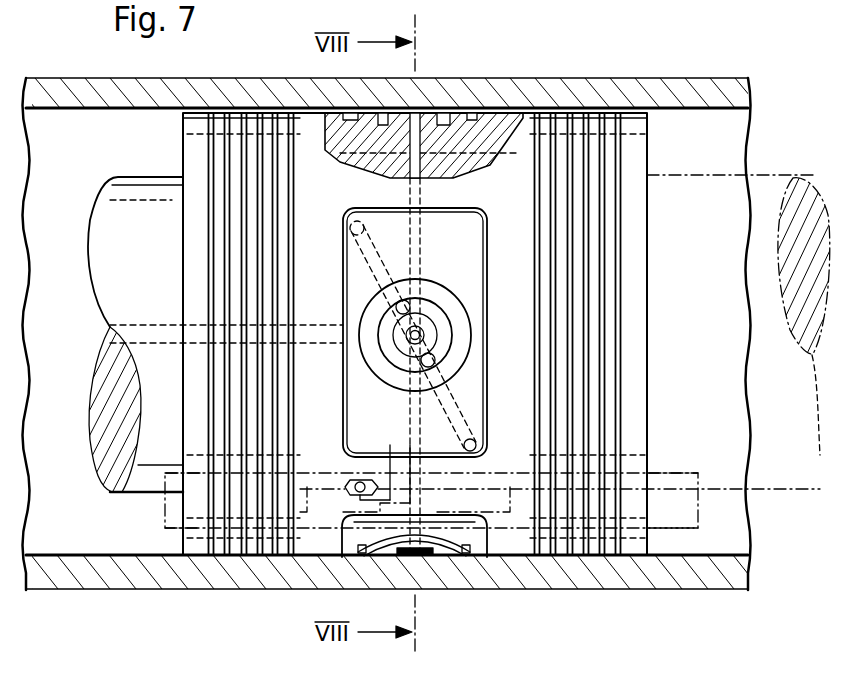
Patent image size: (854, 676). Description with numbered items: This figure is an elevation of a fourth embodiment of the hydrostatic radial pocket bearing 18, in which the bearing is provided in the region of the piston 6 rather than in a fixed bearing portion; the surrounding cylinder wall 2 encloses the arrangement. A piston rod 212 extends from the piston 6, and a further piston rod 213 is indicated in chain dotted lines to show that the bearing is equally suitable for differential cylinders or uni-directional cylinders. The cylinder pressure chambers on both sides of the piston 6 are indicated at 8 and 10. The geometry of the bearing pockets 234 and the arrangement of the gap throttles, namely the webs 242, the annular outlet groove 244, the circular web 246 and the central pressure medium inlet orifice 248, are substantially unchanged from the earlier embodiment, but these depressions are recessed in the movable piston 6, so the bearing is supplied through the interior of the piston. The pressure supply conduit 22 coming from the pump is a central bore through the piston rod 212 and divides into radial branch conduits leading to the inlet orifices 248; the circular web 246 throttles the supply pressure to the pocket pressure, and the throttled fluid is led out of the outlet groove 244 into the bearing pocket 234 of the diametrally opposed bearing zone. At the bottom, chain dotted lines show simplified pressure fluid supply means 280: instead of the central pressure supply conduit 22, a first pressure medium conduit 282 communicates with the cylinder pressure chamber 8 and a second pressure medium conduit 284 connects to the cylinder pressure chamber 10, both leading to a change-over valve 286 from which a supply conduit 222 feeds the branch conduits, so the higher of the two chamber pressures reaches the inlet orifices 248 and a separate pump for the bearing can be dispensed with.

The housing wall 2 is at (667, 85).
The cylinder pressure chamber 8 is at (103, 130).
The cylinder pressure chamber 10 is at (706, 128).
The hydrostatic pocket bearing 18 is at (333, 200).
The piston 6 is at (517, 168).
The bearing pocket 234 is at (462, 225).
The pressure supply conduit 22 is at (143, 327).
The piston rod 212 is at (143, 478).
The further piston rod 213 is at (798, 447).
The webs 242 is at (455, 358).
The annular outlet groove 244 is at (445, 335).
The circular web 246 is at (405, 348).
The central pressure medium inlet orifice 248 is at (420, 330).
The change-over valve 286 is at (345, 482).
The supply conduit 222 is at (388, 468).
The second pressure medium conduit 284 is at (638, 520).
The first pressure medium conduit 282 is at (195, 520).
The pressure fluid supply means 280 is at (690, 528).